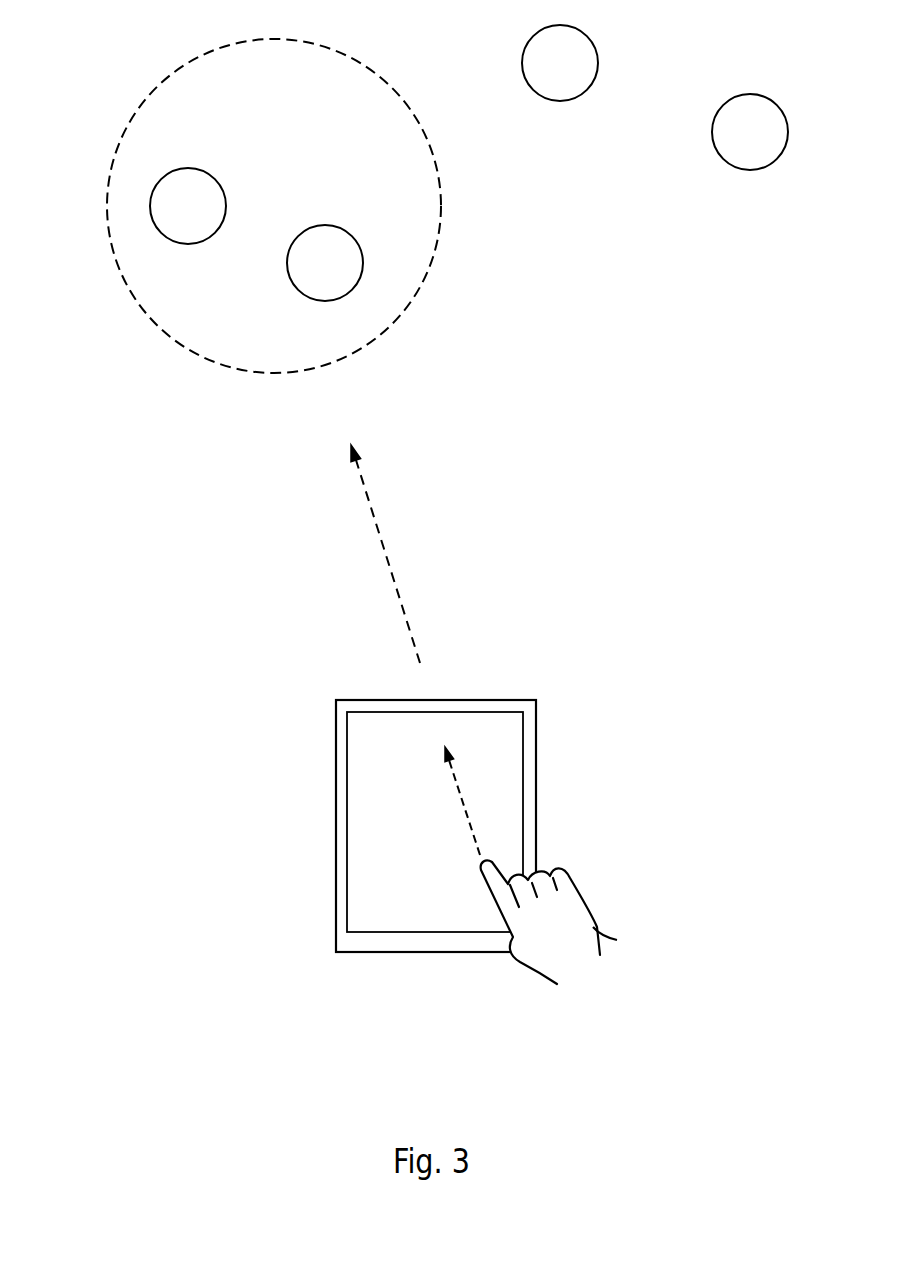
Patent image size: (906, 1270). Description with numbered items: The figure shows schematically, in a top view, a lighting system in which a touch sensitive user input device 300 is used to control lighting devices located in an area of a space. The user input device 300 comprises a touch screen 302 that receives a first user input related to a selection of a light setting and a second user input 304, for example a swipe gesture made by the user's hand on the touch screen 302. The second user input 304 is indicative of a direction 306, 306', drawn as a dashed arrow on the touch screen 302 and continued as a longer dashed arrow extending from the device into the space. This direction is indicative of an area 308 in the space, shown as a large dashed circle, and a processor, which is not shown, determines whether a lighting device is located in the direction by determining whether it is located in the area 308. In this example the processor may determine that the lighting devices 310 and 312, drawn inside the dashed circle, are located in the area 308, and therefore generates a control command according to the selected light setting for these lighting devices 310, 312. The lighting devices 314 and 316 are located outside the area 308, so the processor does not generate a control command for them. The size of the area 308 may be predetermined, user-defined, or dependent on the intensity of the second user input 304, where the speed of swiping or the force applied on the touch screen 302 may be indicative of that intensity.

The user input device 300 is at (531, 730).
The touch screen 302 is at (497, 784).
The second user input 304 is at (567, 925).
The direction 306 is at (529, 805).
The direction 306' is at (330, 554).
The area 308 is at (352, 357).
The lighting device 310 is at (167, 212).
The lighting device 312 is at (355, 258).
The lighting device 314 is at (552, 49).
The lighting device 316 is at (737, 152).